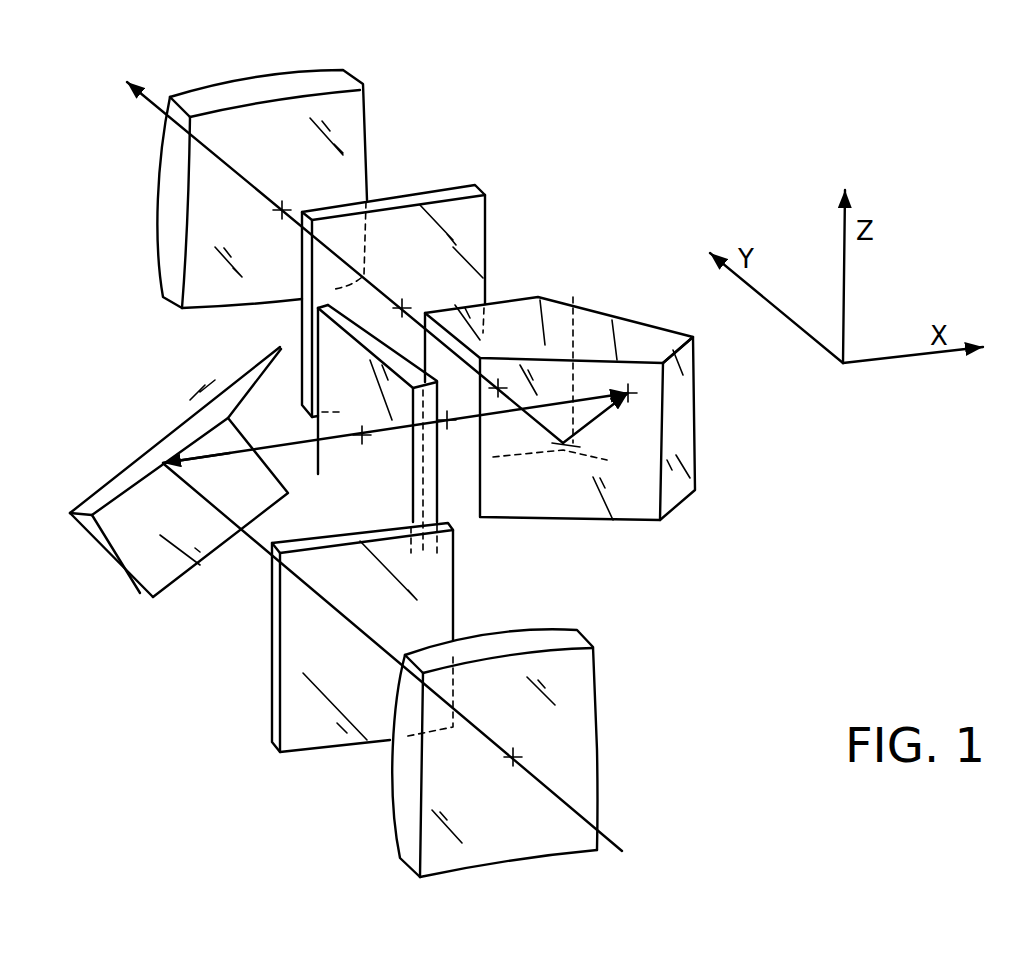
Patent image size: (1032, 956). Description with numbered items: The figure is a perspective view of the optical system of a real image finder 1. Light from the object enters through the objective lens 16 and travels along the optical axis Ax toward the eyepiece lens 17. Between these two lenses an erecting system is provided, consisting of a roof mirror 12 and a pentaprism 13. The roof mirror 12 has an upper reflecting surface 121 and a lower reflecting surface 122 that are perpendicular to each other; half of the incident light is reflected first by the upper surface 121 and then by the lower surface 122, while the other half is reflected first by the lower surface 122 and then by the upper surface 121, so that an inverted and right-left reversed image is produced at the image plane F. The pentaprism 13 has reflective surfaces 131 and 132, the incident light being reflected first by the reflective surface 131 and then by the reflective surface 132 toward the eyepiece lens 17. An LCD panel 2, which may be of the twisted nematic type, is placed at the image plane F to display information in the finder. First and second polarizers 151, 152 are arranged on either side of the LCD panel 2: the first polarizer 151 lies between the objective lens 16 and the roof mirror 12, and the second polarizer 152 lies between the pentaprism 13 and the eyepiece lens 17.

The finder 1 is at (790, 550).
The LCD panel 2 is at (365, 489).
The roof mirror 12 is at (166, 483).
The upper reflecting surface 121 is at (114, 472).
The lower reflecting surface 122 is at (141, 586).
The pentaprism 13 is at (600, 403).
The reflective surface 131 is at (695, 452).
The reflective surface 132 is at (579, 497).
The first polarizer 151 is at (290, 667).
The second polarizer 152 is at (450, 210).
The objective lens 16 is at (417, 800).
The eyepiece lens 17 is at (310, 86).
The optical axis Ax is at (613, 840).
The image plane F is at (317, 440).